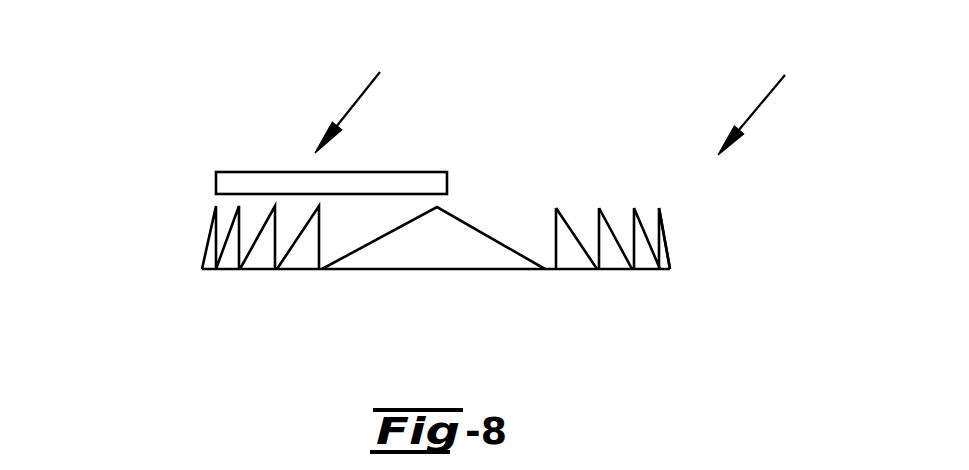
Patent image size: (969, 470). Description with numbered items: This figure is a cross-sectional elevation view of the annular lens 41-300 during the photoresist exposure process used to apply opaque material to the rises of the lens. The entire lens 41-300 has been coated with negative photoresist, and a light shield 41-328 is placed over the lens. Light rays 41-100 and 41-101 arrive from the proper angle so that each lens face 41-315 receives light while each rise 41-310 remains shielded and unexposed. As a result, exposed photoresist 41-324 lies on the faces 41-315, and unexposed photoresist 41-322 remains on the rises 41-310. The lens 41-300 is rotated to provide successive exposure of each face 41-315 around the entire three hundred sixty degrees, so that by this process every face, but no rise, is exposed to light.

The light ray 41-100 is at (357, 100).
The light ray 41-101 is at (757, 108).
The light shield 41-328 is at (216, 195).
The lens 41-300 is at (275, 269).
The rise 41-310 is at (548, 270).
The unexposed photoresist 41-322 is at (599, 208).
The exposed photoresist 41-324 is at (634, 208).
The lens face 41-315 is at (668, 252).